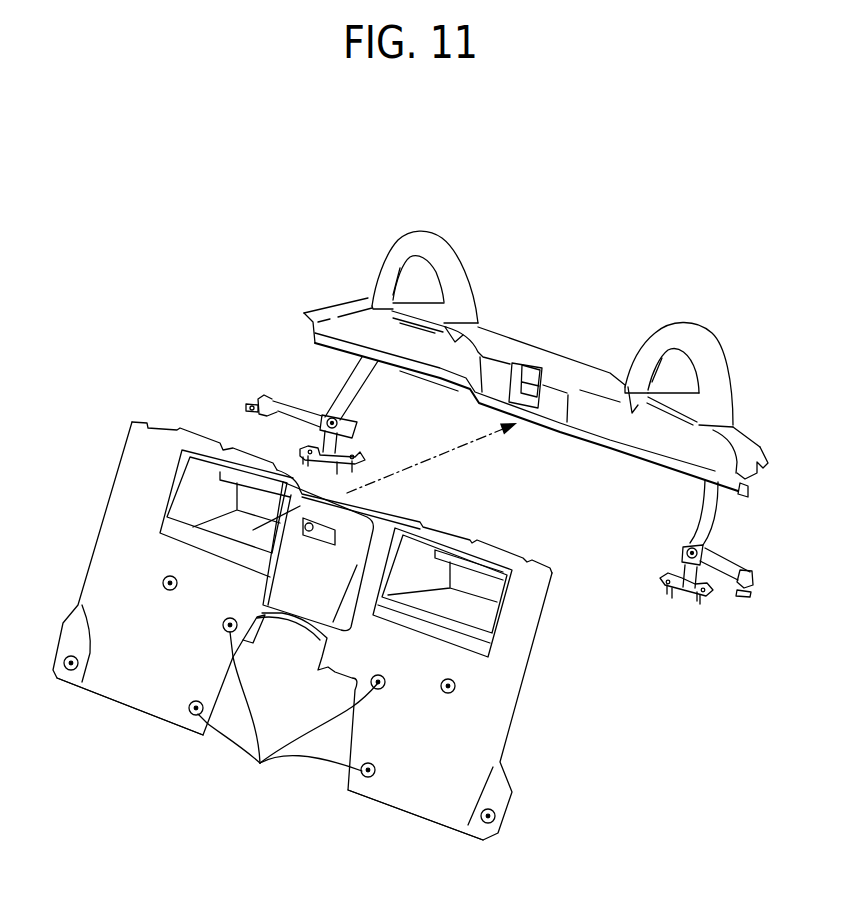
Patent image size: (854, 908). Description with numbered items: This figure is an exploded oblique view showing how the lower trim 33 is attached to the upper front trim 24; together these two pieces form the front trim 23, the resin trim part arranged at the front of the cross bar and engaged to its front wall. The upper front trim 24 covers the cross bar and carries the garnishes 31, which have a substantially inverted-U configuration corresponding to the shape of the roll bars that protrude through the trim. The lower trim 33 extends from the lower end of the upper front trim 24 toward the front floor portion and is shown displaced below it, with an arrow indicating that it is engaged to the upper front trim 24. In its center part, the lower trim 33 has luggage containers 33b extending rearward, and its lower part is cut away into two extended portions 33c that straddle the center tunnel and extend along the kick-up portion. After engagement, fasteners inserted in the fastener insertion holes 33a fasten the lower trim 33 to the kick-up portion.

The front trim 23 is at (258, 215).
The upper front trim 24 is at (345, 323).
The garnish 31 is at (430, 240).
The lower trim 33 is at (167, 452).
The fastener insertion holes 33a is at (288, 716).
The luggage containers 33b is at (463, 607).
The extended portions 33c is at (132, 690).